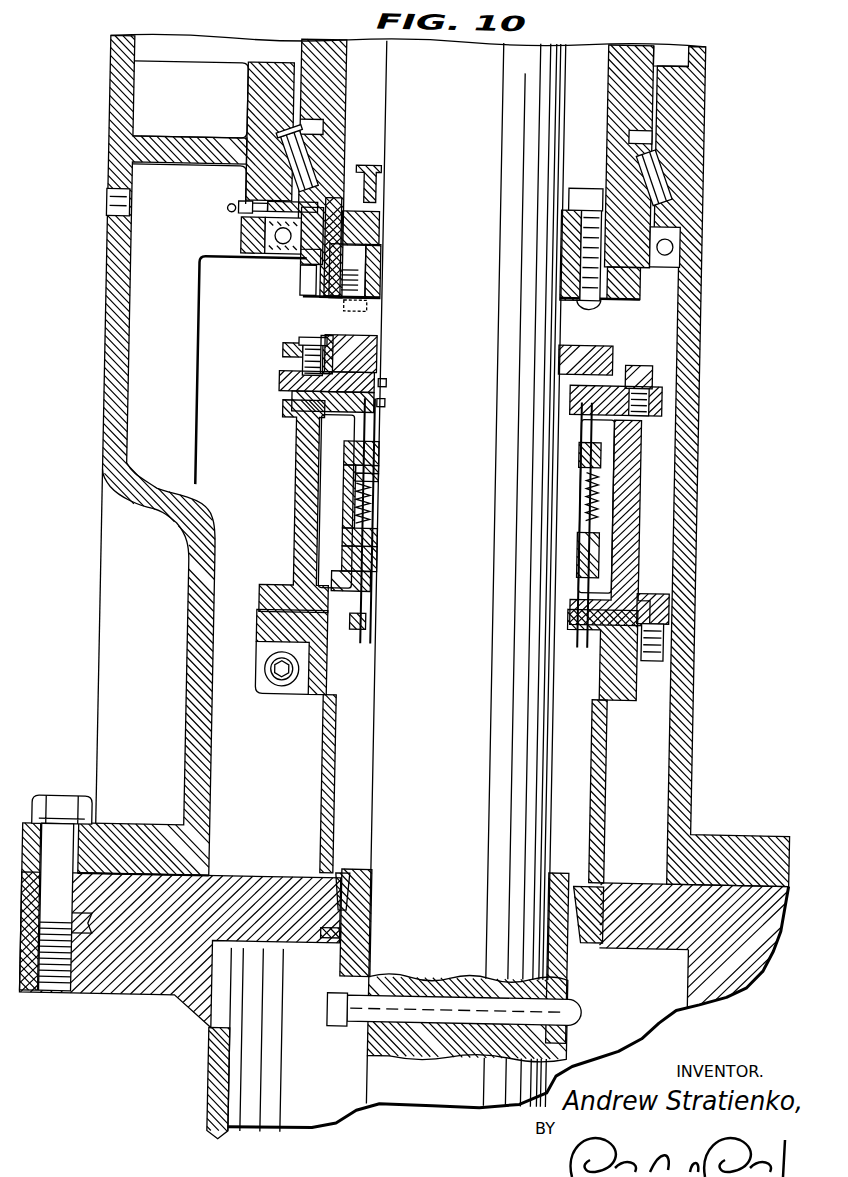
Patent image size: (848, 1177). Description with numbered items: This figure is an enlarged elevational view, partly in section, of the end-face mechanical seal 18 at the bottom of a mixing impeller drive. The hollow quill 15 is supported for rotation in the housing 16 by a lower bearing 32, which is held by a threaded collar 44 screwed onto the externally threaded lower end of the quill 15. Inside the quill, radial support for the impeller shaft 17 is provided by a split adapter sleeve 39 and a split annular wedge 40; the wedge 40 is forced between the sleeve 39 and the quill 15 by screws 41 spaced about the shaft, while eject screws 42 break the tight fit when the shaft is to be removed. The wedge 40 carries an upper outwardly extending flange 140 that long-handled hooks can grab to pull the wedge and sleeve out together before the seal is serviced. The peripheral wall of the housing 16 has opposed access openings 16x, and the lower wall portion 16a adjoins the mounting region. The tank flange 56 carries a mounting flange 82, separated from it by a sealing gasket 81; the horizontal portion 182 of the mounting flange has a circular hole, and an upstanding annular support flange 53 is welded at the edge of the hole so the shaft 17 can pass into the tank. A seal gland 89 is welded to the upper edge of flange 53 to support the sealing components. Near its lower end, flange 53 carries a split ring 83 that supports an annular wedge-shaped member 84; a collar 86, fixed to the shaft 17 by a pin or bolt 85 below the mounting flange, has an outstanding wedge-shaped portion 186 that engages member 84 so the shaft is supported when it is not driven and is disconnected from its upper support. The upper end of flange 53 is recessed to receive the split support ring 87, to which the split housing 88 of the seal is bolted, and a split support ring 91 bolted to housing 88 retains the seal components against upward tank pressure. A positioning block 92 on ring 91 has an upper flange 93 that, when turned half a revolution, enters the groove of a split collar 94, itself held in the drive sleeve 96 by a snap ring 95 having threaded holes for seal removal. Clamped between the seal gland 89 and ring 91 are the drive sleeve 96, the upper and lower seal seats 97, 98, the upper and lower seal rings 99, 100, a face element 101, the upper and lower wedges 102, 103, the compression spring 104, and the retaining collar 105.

The quill 15 is at (316, 45).
The housing 16 is at (102, 464).
The access openings 16x is at (201, 488).
The housing lower wall portion 16a is at (190, 695).
The impeller shaft 17 is at (436, 1106).
The end-face mechanical seal 18 is at (292, 468).
The lower bearing 32 is at (284, 158).
The split adapter sleeve 39 is at (560, 226).
The split annular wedge 40 is at (370, 210).
The screws 41 is at (586, 306).
The eject screws 42 is at (366, 307).
The threaded collar 44 is at (304, 252).
The upstanding annular support flange 53 is at (326, 771).
The tank flange 56 is at (161, 990).
The sealing gasket 81 is at (88, 937).
The mounting flange 82 is at (753, 898).
The split ring 83 is at (340, 940).
The annular wedge-shaped member 84 is at (343, 890).
The pin or bolt 85 is at (586, 1010).
The collar 86 is at (578, 966).
The split support ring 87 is at (272, 640).
The split housing 88 is at (625, 502).
The seal gland 89 is at (356, 628).
The split support ring 91 is at (286, 384).
The positioning block 92 is at (300, 364).
The upper outstanding flange 93 is at (288, 350).
The split collar 94 is at (322, 342).
The snap ring 95 is at (356, 336).
The drive sleeve 96 is at (383, 382).
The upper seal seat 97 is at (382, 405).
The lower seal seat 98 is at (368, 578).
The upper seal ring 99 is at (370, 440).
The lower seal ring 100 is at (372, 532).
The seal face 101 is at (372, 470).
The upper wedge 102 is at (375, 480).
The lower wedge 103 is at (370, 516).
The compression spring 104 is at (366, 494).
The retaining collar 105 is at (355, 511).
The upper outwardly extending flange 140 is at (584, 186).
The horizontal portion 182 is at (140, 922).
The outstanding wedge-shaped portion 186 is at (596, 872).